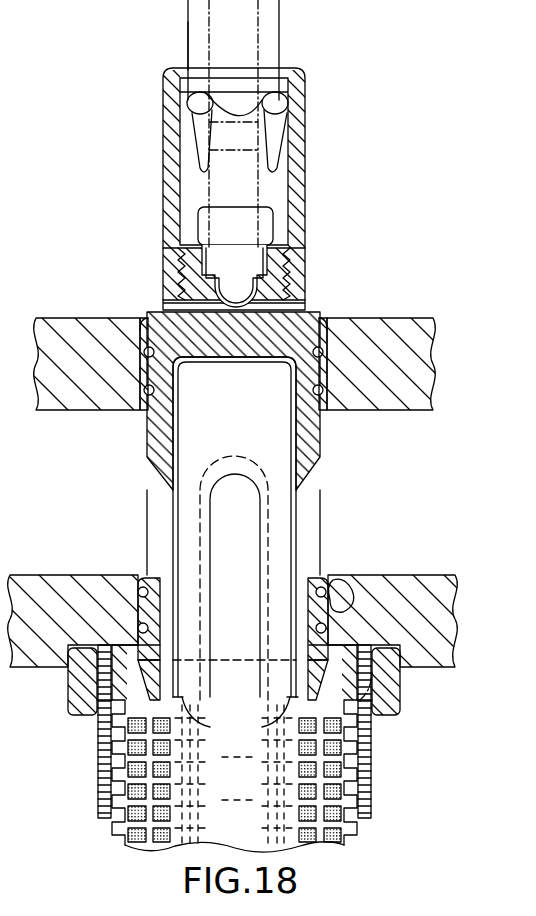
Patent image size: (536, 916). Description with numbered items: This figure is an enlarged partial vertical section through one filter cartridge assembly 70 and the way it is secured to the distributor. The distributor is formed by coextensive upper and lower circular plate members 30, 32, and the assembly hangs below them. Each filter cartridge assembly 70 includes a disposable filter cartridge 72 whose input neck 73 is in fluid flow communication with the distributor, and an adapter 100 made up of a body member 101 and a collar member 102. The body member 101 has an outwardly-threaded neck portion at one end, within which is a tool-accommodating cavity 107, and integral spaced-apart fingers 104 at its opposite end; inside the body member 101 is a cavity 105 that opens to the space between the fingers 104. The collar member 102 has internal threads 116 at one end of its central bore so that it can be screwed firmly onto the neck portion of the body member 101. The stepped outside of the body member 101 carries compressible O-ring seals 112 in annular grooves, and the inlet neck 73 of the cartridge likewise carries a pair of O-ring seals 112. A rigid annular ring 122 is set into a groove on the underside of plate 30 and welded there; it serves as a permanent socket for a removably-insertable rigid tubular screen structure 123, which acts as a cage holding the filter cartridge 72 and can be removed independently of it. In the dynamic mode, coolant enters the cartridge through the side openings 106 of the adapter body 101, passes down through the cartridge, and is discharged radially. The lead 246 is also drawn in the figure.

The conductor lead 246 is at (188, 22).
The rigid annular ring 122 is at (250, 104).
The collar member 102 is at (305, 114).
The tool-accommodating cavity 107 is at (236, 266).
The internal threads 116 is at (302, 281).
The lower circular plate member 32 is at (425, 318).
The O-ring seals 112 is at (147, 390).
The cavity 105 is at (252, 393).
The body member 101 is at (292, 435).
The adapter 100 is at (337, 472).
The side openings 106 is at (256, 545).
The input neck 73 is at (352, 585).
The upper circular plate member 30 is at (392, 575).
The fingers 104 is at (270, 737).
The filter cartridge 72 is at (246, 811).
The tubular screen structure 123 is at (98, 784).
The filter cartridge assembly 70 is at (98, 840).